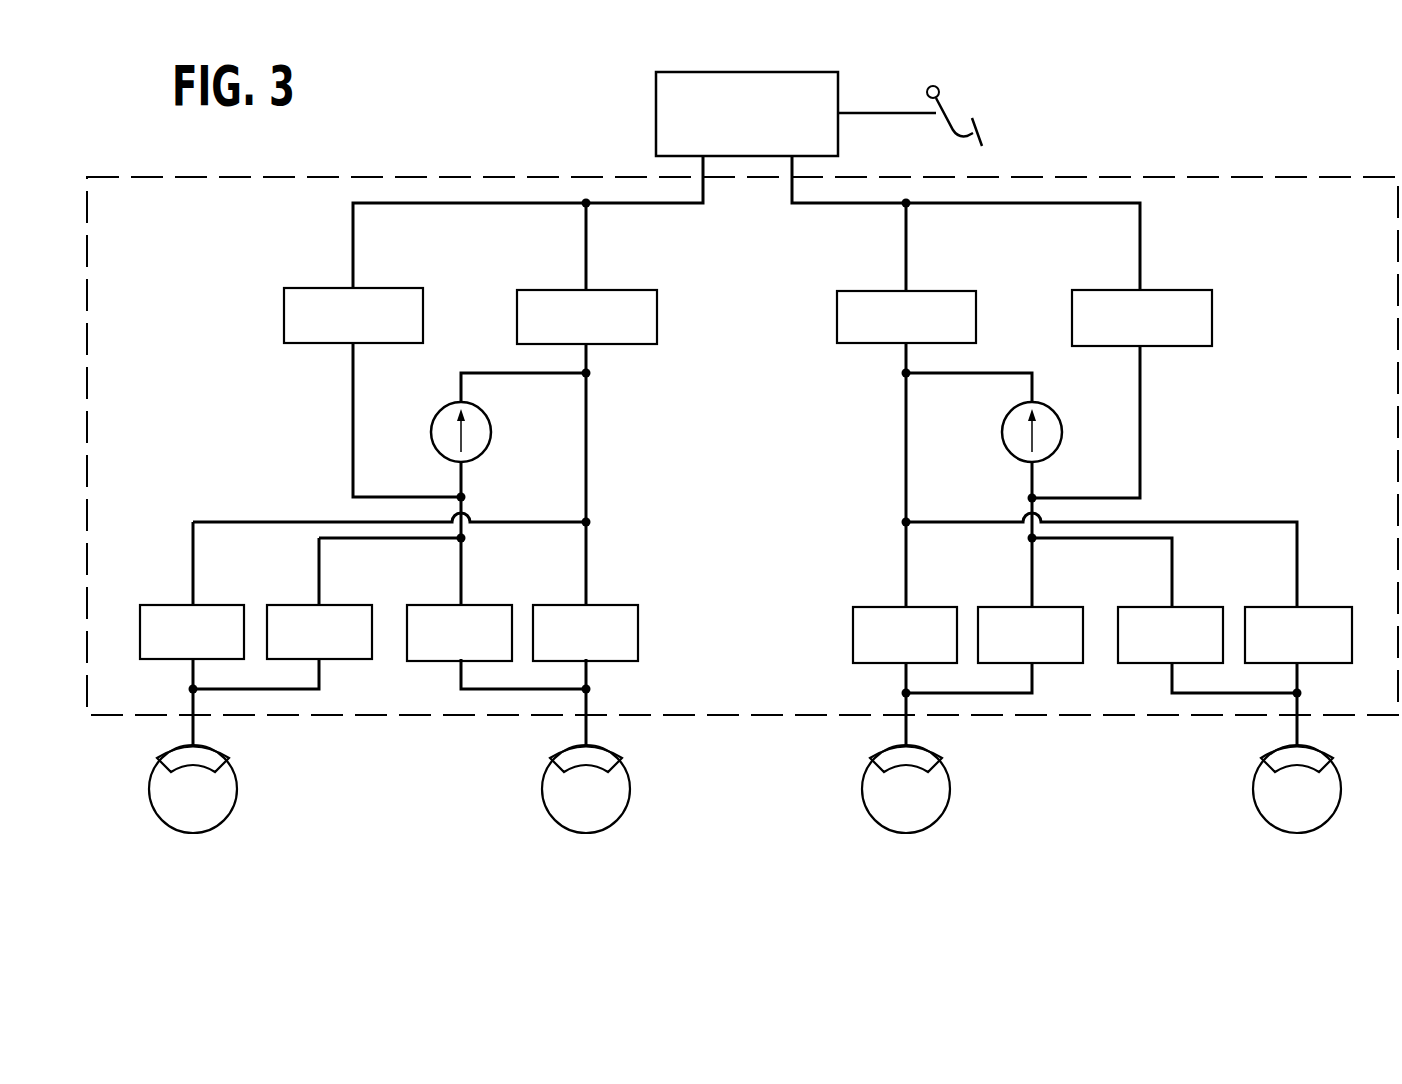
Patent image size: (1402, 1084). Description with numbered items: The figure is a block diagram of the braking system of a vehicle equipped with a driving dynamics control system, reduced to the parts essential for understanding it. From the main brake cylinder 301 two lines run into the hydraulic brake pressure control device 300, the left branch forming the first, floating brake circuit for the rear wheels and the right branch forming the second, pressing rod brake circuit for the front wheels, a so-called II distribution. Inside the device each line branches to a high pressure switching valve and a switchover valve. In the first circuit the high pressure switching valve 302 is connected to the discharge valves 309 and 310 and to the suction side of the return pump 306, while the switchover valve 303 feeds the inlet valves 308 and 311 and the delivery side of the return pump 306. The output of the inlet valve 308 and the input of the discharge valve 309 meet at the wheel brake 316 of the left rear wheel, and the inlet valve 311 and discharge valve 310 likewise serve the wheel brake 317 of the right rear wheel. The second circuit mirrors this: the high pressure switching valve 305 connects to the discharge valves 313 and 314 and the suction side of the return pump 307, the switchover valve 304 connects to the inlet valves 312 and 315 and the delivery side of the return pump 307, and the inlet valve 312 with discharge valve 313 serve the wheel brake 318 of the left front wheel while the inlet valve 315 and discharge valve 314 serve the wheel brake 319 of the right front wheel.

The hydraulic brake pressure control device 300 is at (1268, 177).
The main brake cylinder 301 is at (656, 113).
The high pressure switching valve HSV1 302 is at (284, 318).
The switchover valve USV1 303 is at (657, 318).
The switchover valve USV2 304 is at (837, 325).
The high pressure switching valve HSV2 305 is at (1212, 318).
The return pump RFP1 306 is at (490, 438).
The return pump RFP2 307 is at (1003, 438).
The inlet valve EVHL 308 is at (173, 605).
The discharge valve AVHL 309 is at (300, 605).
The discharge valve AVHR 310 is at (488, 605).
The inlet valve EVHR 311 is at (616, 605).
The inlet valve EVVL 312 is at (876, 607).
The discharge valve AVVL 313 is at (1000, 607).
The discharge valve AVVR 314 is at (1188, 607).
The inlet valve EVVR 315 is at (1315, 607).
The wheel brake of left rear wheel 316 is at (222, 778).
The wheel brake of right rear wheel 317 is at (557, 778).
The wheel brake of left front wheel 318 is at (933, 778).
The wheel brake of right front wheel 319 is at (1265, 778).